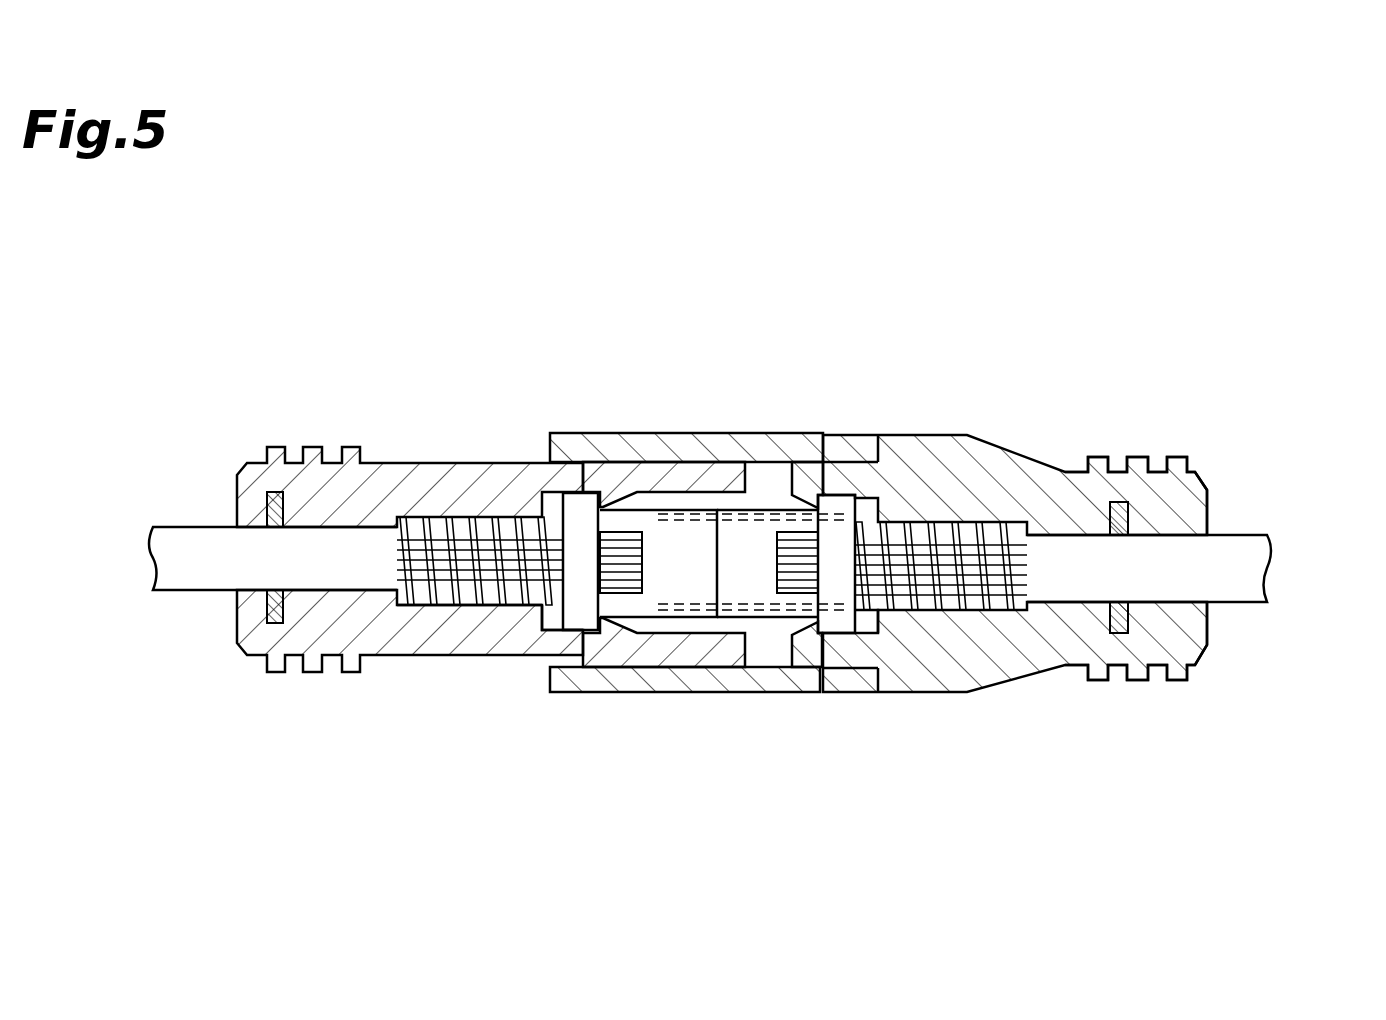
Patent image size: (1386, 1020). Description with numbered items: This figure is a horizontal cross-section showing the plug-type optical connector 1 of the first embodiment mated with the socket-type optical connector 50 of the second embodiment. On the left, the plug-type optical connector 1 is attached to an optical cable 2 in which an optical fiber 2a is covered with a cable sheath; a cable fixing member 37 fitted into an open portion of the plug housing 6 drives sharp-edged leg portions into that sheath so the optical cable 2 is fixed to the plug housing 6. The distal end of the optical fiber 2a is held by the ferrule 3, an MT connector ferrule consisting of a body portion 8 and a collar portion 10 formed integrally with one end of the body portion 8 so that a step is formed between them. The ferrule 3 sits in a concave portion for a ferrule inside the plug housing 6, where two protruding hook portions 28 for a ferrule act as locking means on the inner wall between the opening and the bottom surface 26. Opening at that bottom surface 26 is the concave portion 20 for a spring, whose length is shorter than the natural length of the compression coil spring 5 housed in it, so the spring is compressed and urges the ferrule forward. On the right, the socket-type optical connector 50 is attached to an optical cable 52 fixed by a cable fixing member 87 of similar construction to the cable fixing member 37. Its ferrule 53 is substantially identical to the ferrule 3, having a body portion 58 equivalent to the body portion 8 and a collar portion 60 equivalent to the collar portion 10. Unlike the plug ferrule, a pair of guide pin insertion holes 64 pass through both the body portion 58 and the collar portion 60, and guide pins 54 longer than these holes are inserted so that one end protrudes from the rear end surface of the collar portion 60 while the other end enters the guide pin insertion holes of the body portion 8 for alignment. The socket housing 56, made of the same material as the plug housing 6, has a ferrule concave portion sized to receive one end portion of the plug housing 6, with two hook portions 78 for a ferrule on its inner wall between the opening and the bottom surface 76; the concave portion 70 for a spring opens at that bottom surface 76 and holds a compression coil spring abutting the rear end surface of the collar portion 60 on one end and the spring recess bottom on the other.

The plug-type optical connector 1 is at (449, 372).
The socket-type optical connector 50 is at (976, 352).
The optical cable 2 is at (175, 562).
The optical fiber 2a is at (373, 610).
The ferrule 3 is at (635, 628).
The compression coil spring 5 is at (443, 610).
The plug housing 6 is at (428, 462).
The body portion 8 is at (640, 512).
The collar portion 10 is at (578, 512).
The concave portion for a spring 20 is at (463, 607).
The bottom surface 26 is at (532, 625).
The hook portions for a ferrule 28 is at (605, 500).
The cable fixing member 37 is at (272, 495).
The optical cable 52 is at (1247, 577).
The ferrule 53 is at (766, 630).
The guide pin 54 is at (882, 492).
The socket housing 56 is at (1034, 448).
The body portion 58 is at (760, 530).
The collar portion 60 is at (840, 500).
The guide pin insertion holes 64 is at (690, 530).
The concave portion for a spring 70 is at (962, 612).
The bottom surface 76 is at (885, 625).
The hook portions for a ferrule 78 is at (805, 480).
The cable fixing member 87 is at (1120, 500).